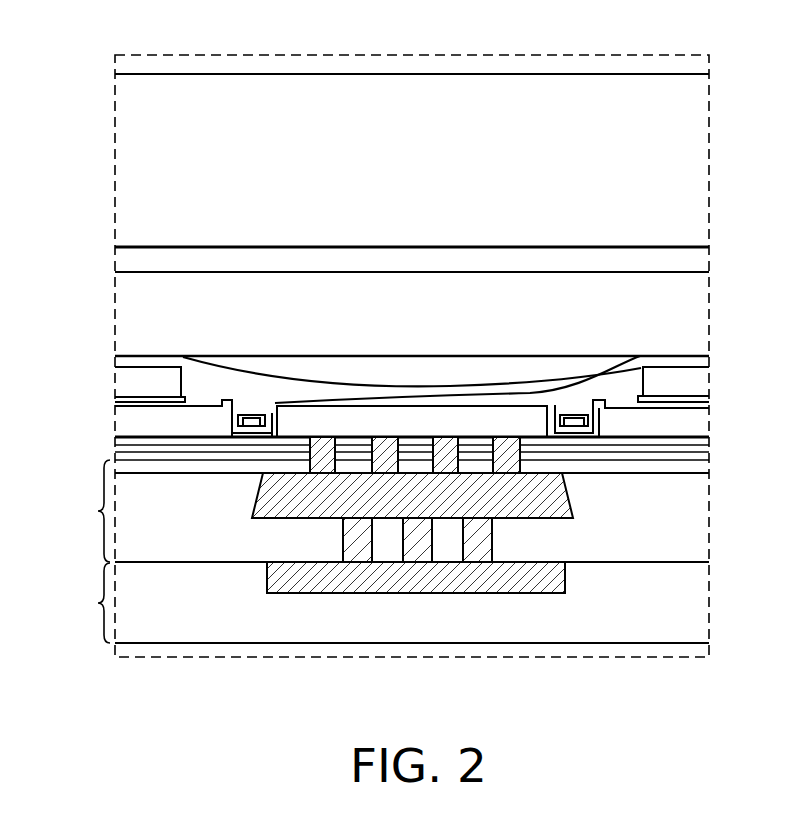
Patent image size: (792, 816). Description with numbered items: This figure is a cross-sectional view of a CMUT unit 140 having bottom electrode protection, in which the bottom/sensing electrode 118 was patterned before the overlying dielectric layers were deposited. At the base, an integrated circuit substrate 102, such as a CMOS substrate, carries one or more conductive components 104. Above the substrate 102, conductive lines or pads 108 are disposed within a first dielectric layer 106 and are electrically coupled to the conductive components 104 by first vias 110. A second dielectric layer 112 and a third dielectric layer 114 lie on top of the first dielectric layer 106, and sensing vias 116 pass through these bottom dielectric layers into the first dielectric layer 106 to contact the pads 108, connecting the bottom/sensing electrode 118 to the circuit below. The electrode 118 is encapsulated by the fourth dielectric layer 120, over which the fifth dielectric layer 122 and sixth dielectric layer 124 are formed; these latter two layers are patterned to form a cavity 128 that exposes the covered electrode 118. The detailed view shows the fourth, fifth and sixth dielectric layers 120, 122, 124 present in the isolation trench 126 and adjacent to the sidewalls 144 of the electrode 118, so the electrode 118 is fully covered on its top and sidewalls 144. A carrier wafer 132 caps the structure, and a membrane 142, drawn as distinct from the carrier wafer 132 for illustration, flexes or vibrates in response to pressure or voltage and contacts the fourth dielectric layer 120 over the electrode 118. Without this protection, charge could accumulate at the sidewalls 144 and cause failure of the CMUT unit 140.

The integrated circuit substrate 102 is at (384, 603).
The conductive components 104 is at (424, 583).
The first dielectric layer 106 is at (384, 511).
The conductive lines or pads 108 is at (557, 498).
The first vias 110 is at (485, 547).
The second dielectric layer 112 is at (117, 455).
The third dielectric layer 114 is at (120, 442).
The sensing vias 116 is at (445, 452).
The bottom/sensing electrode 118 is at (388, 420).
The fourth dielectric layer 120 is at (117, 407).
The fifth dielectric layer 122 is at (120, 398).
The sixth dielectric layer 124 is at (120, 379).
The isolation trench 126 is at (233, 398).
The cavity 128 is at (628, 384).
The carrier wafer 132 is at (438, 176).
The CMUT unit 140 is at (680, 52).
The membrane 142 is at (140, 360).
The sidewalls of the bottom/sensing electrode 144 is at (271, 405).